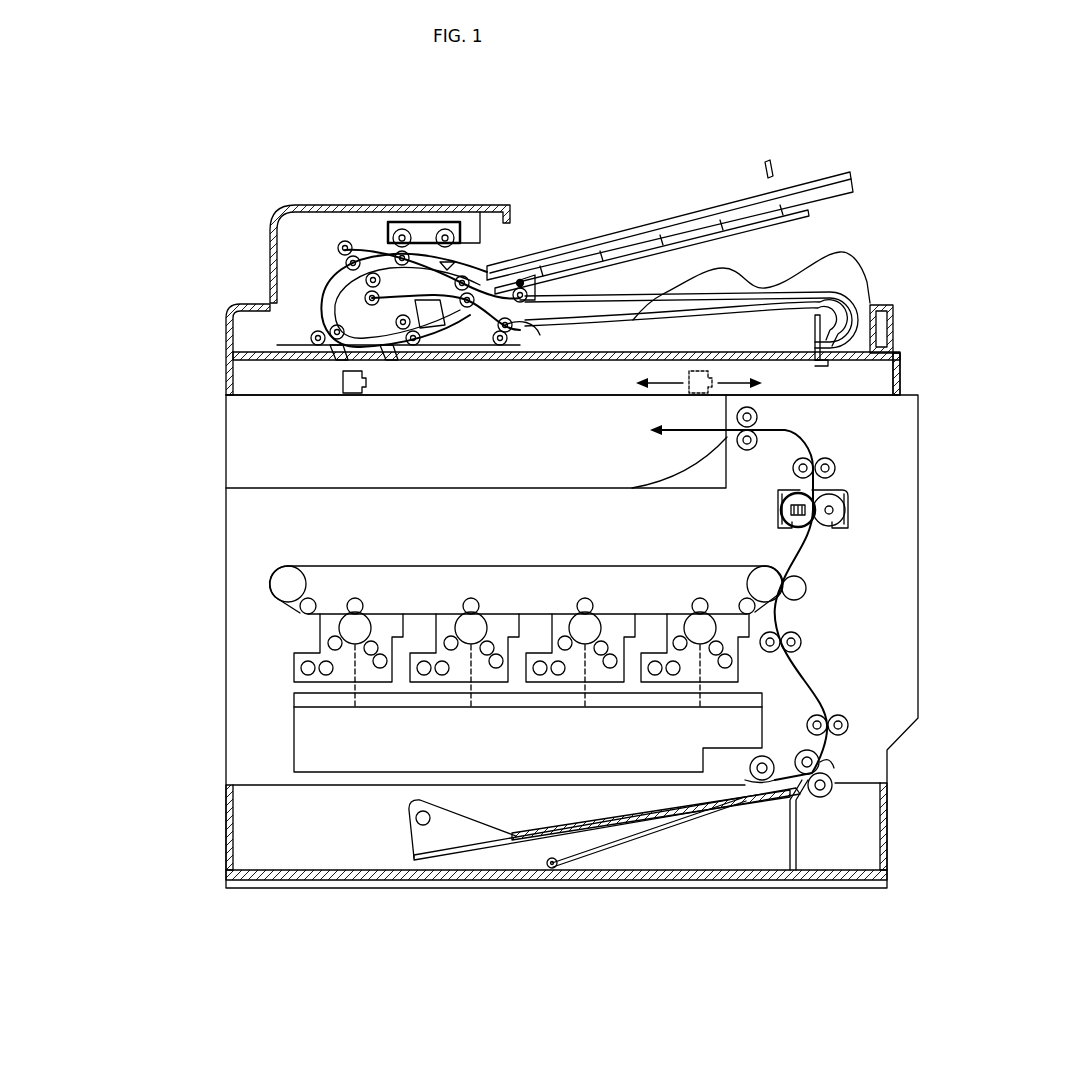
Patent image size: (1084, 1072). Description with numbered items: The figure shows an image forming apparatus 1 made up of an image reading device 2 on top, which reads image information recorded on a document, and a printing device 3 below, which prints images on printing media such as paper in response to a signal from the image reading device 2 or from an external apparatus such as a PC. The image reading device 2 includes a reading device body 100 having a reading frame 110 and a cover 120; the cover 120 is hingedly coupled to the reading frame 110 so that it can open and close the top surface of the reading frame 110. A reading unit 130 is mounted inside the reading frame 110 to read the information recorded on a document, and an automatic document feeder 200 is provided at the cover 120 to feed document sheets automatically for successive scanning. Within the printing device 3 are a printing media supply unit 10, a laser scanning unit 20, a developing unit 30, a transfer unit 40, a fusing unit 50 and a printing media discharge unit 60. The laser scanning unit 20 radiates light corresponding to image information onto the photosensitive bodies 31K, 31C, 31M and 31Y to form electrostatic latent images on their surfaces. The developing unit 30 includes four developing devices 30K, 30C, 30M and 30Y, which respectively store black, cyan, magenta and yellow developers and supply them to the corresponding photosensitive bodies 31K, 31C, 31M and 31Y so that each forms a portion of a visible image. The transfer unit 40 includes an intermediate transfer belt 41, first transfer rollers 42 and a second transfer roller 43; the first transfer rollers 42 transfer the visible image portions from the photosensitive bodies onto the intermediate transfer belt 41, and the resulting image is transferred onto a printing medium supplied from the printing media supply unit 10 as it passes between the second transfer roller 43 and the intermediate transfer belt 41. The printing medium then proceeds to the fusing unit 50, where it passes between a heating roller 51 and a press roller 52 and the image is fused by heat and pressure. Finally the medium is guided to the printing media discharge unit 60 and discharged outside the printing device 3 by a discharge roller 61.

The image forming apparatus 1 is at (592, 1000).
The image reading device 2 is at (255, 180).
The printing device 3 is at (208, 576).
The printing media supply unit 10 is at (486, 893).
The laser scanning unit 20 is at (290, 722).
The developing unit 30 is at (758, 665).
The developing device 30Y is at (299, 640).
The developing device 30M is at (418, 690).
The developing device 30C is at (545, 690).
The developing device 30K is at (665, 690).
The photosensitive body 31Y is at (382, 612).
The photosensitive body 31M is at (499, 612).
The photosensitive body 31C is at (611, 612).
The photosensitive body 31K is at (726, 612).
The transfer unit 40 is at (540, 558).
The intermediate transfer belt 41 is at (430, 612).
The first transfer rollers 42 is at (350, 598).
The second transfer roller 43 is at (806, 590).
The fusing unit 50 is at (853, 478).
The heating roller 51 is at (782, 503).
The press roller 52 is at (840, 515).
The printing media discharge unit 60 is at (775, 417).
The discharge roller 61 is at (754, 448).
The reading device body 100 is at (132, 356).
The reading frame 110 is at (220, 381).
The cover 120 is at (255, 265).
The reading unit 130 is at (343, 382).
The automatic document feeder 200 is at (490, 220).